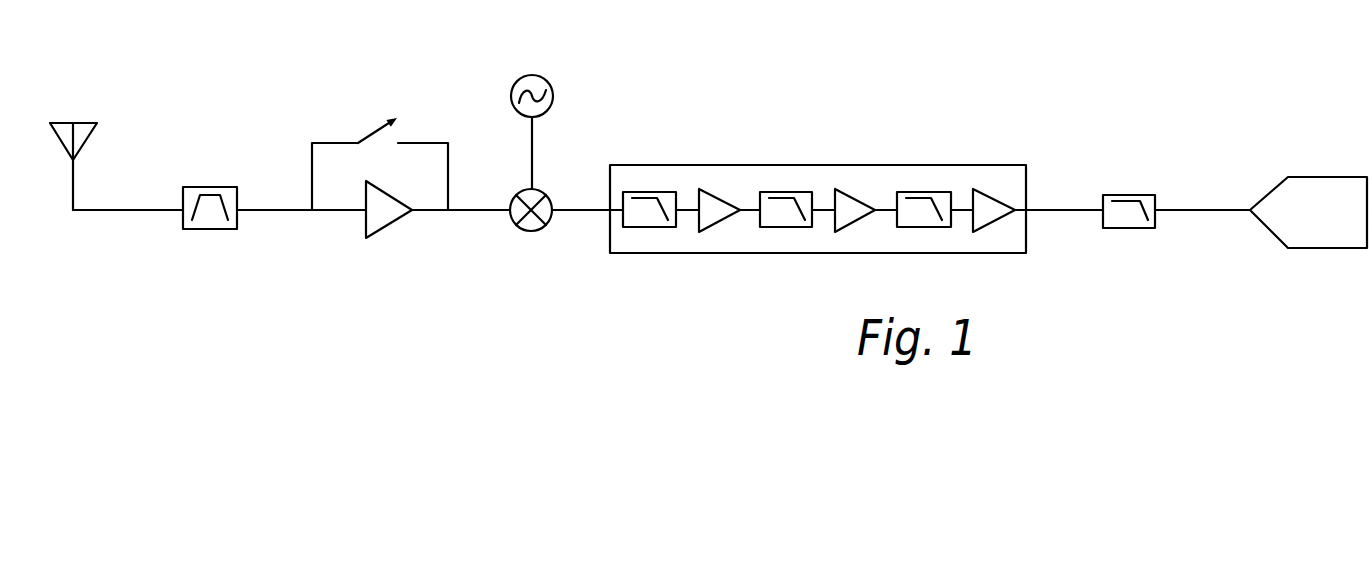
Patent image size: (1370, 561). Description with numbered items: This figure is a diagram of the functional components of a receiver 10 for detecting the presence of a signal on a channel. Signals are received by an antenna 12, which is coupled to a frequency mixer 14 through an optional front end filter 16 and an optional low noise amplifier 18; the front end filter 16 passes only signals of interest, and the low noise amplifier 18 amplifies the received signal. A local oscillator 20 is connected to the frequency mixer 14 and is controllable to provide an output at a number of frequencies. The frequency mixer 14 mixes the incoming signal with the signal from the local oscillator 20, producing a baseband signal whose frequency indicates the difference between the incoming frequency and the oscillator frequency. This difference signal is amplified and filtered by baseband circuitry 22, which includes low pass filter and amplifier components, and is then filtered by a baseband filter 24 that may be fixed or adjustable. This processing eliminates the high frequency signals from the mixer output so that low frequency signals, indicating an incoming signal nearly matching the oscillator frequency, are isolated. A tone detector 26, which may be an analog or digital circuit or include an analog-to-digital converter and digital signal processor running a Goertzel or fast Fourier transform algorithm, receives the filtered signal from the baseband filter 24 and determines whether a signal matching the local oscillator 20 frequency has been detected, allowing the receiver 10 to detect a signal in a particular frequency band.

The receiver 10 is at (731, 102).
The antenna 12 is at (98, 123).
The frequency mixer 14 is at (547, 188).
The front end filter 16 is at (205, 187).
The low noise amplifier 18 is at (435, 119).
The local oscillator 20 is at (538, 80).
The baseband circuitry 22 is at (805, 165).
The baseband filter 24 is at (1115, 195).
The tone detector 26 is at (1285, 177).